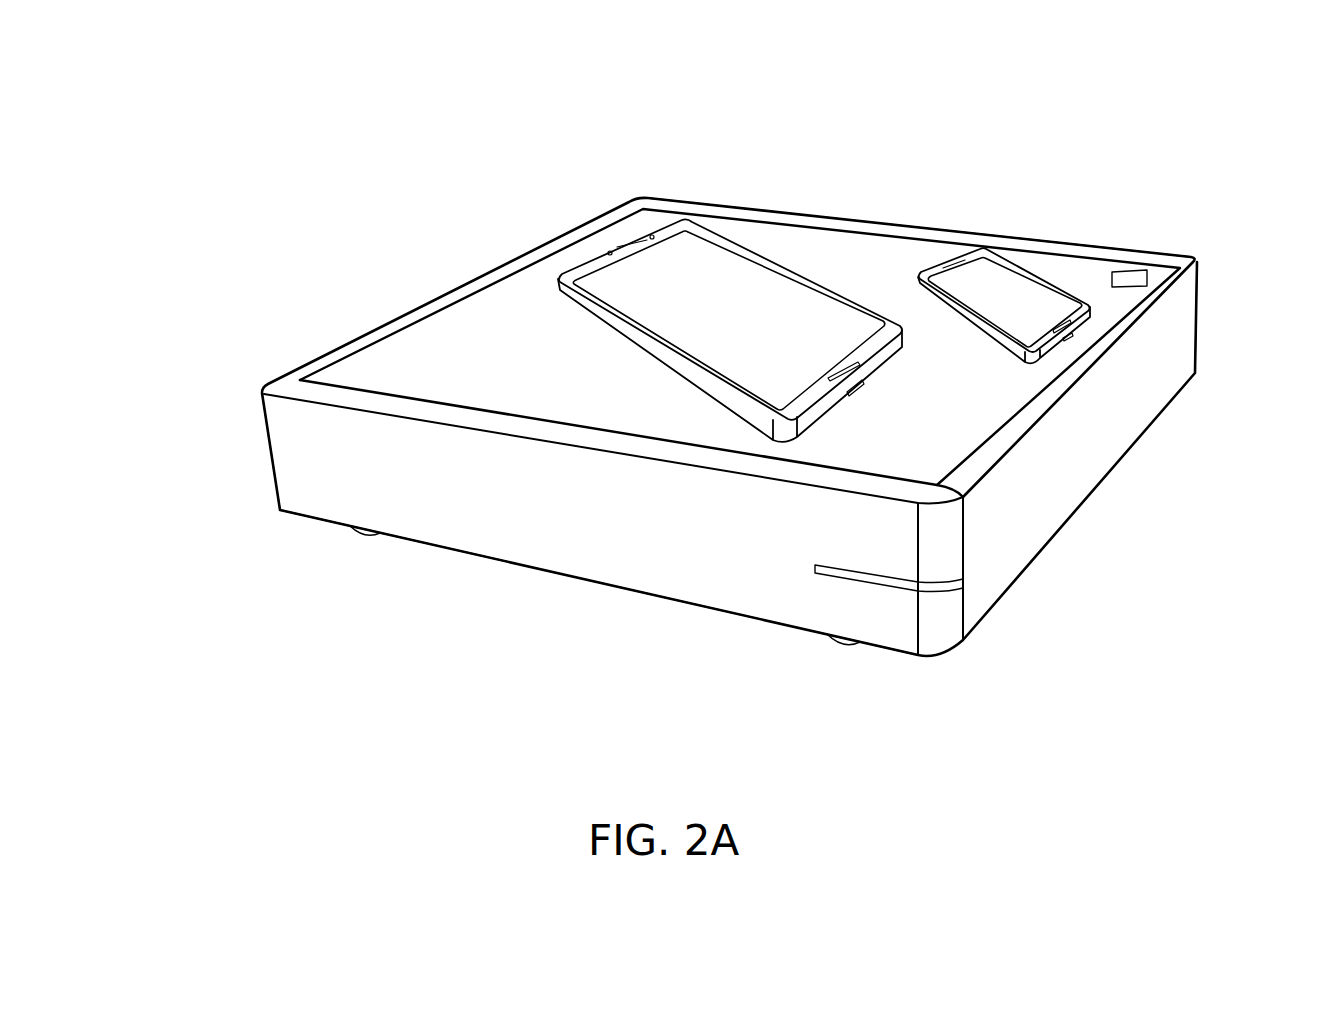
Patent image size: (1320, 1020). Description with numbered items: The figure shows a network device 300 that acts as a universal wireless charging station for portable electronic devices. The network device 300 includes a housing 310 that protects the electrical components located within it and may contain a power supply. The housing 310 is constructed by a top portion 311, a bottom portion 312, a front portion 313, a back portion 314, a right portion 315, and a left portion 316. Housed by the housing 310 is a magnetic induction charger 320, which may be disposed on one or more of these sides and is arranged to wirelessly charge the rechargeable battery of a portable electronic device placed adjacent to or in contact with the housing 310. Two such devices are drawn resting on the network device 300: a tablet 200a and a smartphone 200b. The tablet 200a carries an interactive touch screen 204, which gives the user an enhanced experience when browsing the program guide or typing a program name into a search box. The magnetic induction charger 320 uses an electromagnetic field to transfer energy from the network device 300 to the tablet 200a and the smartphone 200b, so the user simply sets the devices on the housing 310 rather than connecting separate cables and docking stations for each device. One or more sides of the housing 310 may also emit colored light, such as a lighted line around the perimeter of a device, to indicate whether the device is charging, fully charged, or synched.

The network device 300 is at (378, 100).
The housing 310 is at (299, 360).
The top portion 311 is at (831, 220).
The bottom portion 312 is at (452, 556).
The front portion 313 is at (618, 545).
The back portion 314 is at (1206, 313).
The right portion 315 is at (262, 449).
The left portion 316 is at (1130, 270).
The magnetic induction charger 320 is at (467, 310).
The tablet 200a is at (704, 228).
The smartphone 200b is at (1014, 262).
The interactive touch screen 204 is at (652, 273).